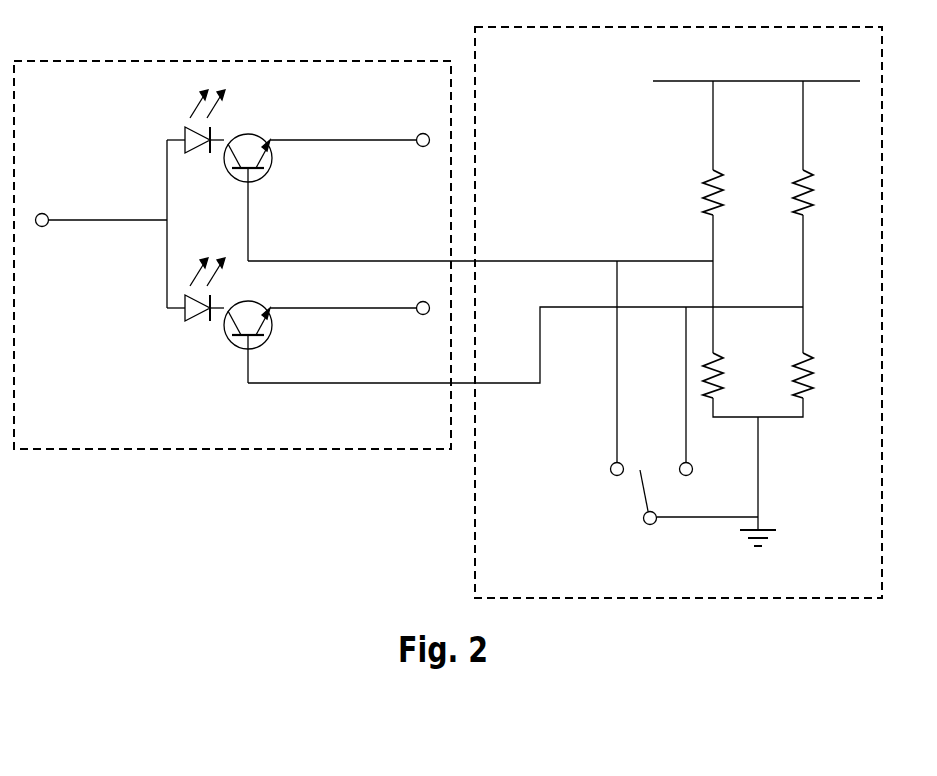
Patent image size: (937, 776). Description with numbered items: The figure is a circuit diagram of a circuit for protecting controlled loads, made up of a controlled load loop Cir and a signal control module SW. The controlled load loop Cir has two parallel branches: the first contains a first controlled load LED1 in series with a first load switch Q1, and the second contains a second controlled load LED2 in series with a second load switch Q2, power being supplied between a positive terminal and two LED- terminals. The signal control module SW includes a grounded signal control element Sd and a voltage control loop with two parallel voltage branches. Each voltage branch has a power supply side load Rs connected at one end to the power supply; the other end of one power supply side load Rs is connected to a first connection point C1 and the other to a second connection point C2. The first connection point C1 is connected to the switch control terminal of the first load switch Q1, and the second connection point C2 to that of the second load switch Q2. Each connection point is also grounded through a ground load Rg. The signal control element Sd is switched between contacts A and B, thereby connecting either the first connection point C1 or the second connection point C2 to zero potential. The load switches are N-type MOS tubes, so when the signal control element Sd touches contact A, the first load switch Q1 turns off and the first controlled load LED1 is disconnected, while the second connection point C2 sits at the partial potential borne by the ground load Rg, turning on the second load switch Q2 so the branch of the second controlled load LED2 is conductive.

The controlled load loop Cir is at (232, 255).
The LED− terminal LED- is at (350, 214).
The first controlled load LED1 is at (186, 121).
The second controlled load LED2 is at (186, 303).
The first load switch Q1 is at (258, 197).
The second load switch Q2 is at (258, 342).
The signal control module SW is at (678, 312).
The power supply side load Rs is at (776, 192).
The ground load Rg is at (774, 375).
The first connection point C1 is at (731, 284).
The second connection point C2 is at (820, 284).
The contact A is at (606, 370).
The contact B is at (699, 392).
The signal control element Sd is at (699, 497).